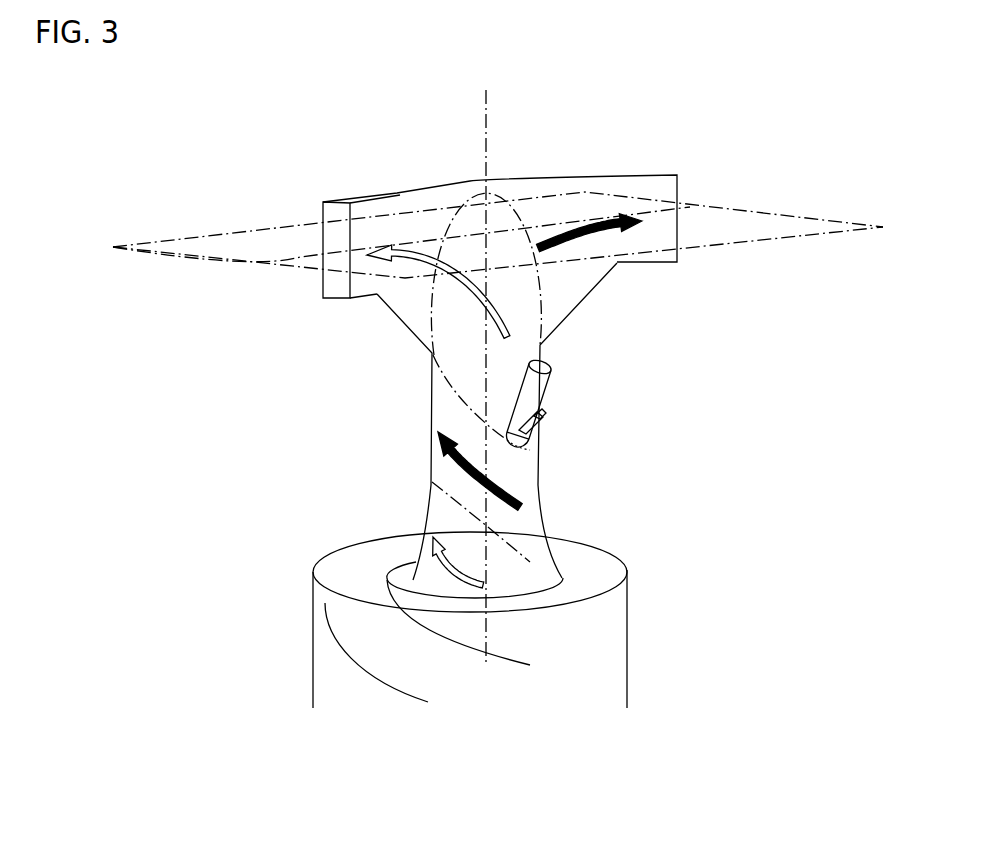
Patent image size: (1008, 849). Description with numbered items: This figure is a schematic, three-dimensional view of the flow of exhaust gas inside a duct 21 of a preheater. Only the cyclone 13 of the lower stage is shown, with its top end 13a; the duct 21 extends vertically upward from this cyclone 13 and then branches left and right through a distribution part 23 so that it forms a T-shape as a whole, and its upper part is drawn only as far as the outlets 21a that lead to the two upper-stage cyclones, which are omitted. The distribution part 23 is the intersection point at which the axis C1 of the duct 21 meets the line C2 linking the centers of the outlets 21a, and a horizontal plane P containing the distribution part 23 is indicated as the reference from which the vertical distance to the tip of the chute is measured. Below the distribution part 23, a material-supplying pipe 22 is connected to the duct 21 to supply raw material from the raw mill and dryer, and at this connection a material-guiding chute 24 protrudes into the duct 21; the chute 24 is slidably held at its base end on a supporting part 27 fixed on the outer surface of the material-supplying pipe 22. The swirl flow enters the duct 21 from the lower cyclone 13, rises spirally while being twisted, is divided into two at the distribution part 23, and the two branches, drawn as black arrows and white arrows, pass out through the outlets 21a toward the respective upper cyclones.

The cyclone 13 is at (620, 617).
The top end of the cyclone 13a is at (348, 562).
The duct 21 is at (535, 507).
The outlet 21a is at (330, 238).
The material-supplying pipe 22 is at (545, 388).
The distribution part 23 is at (487, 208).
The material-guiding chute 24 is at (530, 450).
The supporting part 27 is at (545, 425).
The axis of the duct C1 is at (485, 131).
The line linking centers of the outlets C2 is at (300, 258).
The horizontal plane P is at (763, 225).